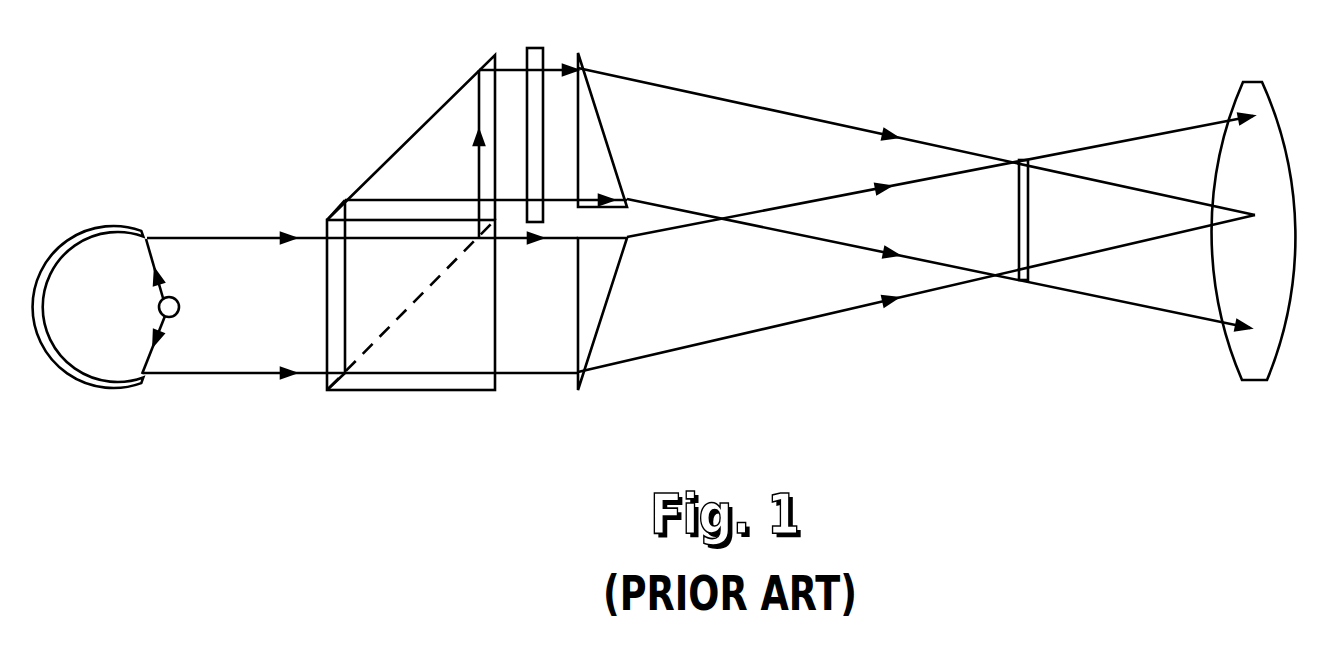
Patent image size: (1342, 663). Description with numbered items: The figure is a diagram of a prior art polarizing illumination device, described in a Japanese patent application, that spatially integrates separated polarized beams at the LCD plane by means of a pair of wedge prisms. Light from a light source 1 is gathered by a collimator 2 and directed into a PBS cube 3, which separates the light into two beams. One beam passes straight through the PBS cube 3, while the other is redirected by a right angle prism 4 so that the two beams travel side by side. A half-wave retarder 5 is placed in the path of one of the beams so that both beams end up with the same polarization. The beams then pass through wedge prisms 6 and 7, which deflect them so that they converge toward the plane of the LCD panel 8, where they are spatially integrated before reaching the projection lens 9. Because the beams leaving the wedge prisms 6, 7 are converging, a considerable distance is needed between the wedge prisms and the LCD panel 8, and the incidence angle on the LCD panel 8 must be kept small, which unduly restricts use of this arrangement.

The light source 1 is at (180, 308).
The collimator 2 is at (117, 327).
The PBS cube 3 is at (463, 347).
The right angle prism 4 is at (423, 123).
The half-wave retarder 5 is at (535, 47).
The wedge prism 6 is at (608, 147).
The wedge prism 7 is at (606, 304).
The LCD panel 8 is at (1020, 197).
The projection lens 9 is at (1293, 247).